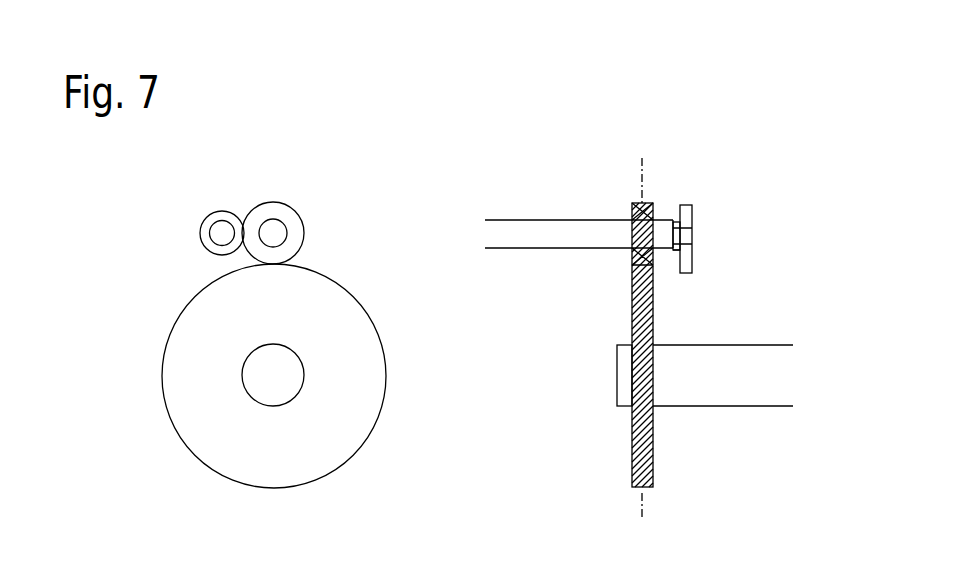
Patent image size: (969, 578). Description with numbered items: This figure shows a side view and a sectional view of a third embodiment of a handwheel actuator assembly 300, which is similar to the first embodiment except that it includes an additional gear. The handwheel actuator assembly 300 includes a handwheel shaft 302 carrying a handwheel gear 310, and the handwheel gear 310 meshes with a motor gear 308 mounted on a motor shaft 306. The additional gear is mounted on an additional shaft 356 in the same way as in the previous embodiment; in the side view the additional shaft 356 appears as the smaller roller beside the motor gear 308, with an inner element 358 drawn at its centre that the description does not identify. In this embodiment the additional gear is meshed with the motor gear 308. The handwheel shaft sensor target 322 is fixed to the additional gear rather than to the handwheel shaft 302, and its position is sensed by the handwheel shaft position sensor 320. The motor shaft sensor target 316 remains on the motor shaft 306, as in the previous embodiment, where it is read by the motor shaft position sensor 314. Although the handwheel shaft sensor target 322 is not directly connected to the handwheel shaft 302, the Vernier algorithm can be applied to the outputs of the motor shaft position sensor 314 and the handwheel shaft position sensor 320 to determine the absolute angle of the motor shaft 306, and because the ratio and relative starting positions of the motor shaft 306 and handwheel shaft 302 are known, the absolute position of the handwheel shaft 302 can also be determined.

The handwheel actuator assembly 300 is at (126, 231).
The handwheel shaft 302 is at (273, 407).
The motor shaft 306 is at (284, 222).
The motor gear 308 is at (273, 202).
The handwheel gear 310 is at (335, 470).
The motor shaft position sensor 314 is at (690, 227).
The motor shaft sensor target 316 is at (673, 206).
The handwheel shaft position sensor 320 is at (692, 244).
The handwheel shaft sensor target 322 is at (692, 250).
The additional shaft 356 is at (217, 211).
The guide roller axle 358 is at (212, 245).